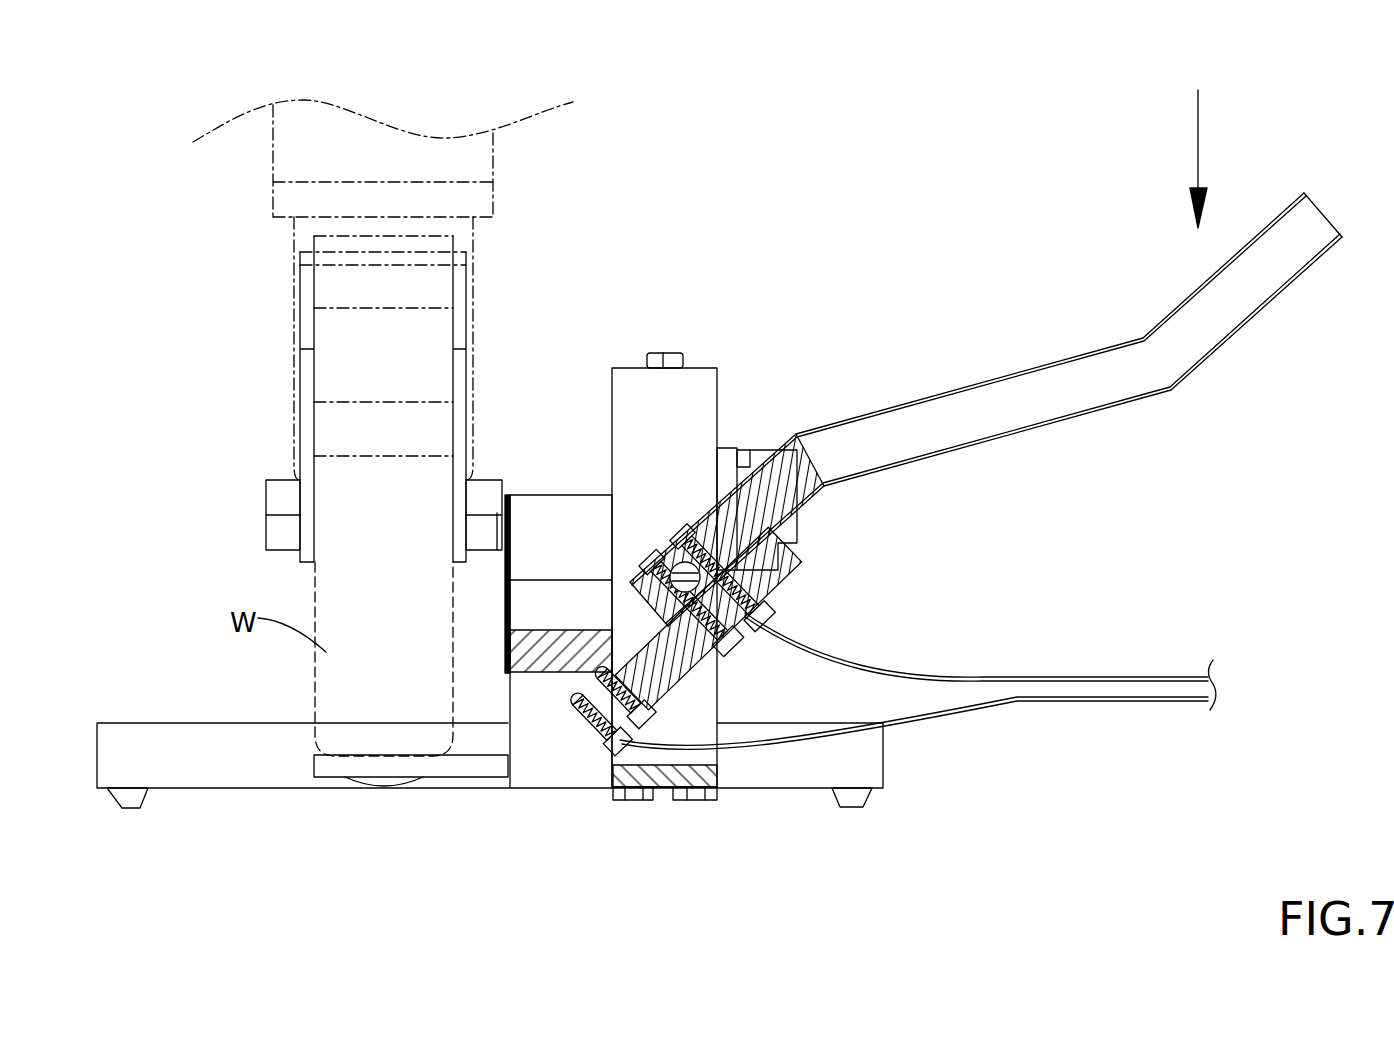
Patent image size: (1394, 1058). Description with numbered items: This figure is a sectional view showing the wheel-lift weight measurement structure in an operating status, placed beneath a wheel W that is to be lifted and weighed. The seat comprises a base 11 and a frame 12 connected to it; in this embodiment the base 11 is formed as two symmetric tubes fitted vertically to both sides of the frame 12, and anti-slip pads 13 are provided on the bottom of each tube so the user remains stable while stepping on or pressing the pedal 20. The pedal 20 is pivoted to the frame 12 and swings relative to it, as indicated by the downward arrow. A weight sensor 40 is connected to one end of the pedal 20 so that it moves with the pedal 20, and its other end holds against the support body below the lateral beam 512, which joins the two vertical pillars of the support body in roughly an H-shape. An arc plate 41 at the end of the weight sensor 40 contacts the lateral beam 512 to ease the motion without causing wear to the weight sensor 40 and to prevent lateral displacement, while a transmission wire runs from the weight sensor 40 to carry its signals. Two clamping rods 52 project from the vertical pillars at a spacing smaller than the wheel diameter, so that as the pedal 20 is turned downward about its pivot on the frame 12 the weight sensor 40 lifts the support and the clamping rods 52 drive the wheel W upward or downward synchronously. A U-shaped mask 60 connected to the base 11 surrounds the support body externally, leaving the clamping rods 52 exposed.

The base 11 is at (255, 775).
The frame 12 is at (632, 385).
The foot 13 is at (122, 800).
The pedal 20 is at (1237, 318).
The weight sensor 40 is at (748, 592).
The arc plate 41 is at (578, 700).
The clamping rod 52 is at (473, 765).
The U-shaped mask 60 is at (505, 497).
The lateral beam 512 is at (590, 630).